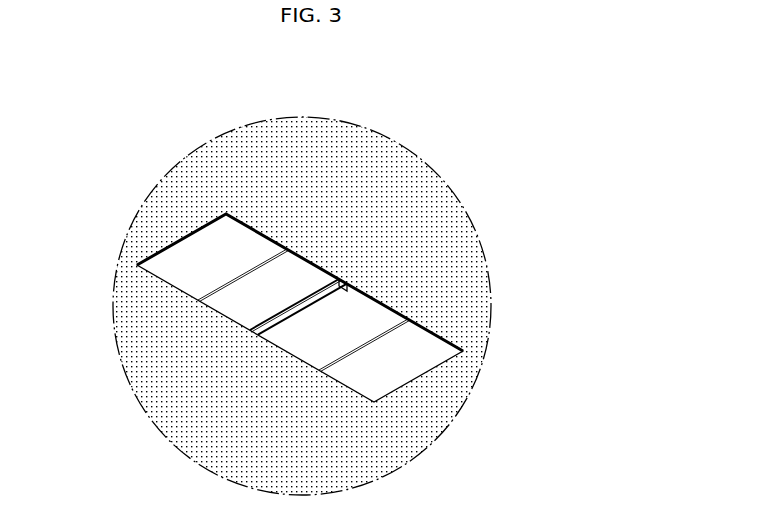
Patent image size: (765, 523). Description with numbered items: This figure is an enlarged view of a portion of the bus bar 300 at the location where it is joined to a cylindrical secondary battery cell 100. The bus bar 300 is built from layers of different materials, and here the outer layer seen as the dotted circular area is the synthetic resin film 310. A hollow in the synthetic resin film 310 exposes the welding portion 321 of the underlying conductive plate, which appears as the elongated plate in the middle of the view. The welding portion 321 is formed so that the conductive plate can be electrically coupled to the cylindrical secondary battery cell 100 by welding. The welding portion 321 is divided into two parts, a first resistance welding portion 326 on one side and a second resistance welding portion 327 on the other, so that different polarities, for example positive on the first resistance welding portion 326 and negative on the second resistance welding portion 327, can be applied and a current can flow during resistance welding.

The bus bar 300 is at (310, 279).
The synthetic resin film 310 is at (432, 189).
The welding portion 321 is at (134, 447).
The first resistance welding portion 326 is at (183, 262).
The second resistance welding portion 327 is at (395, 366).
The cylindrical secondary battery cell 100 is at (347, 286).